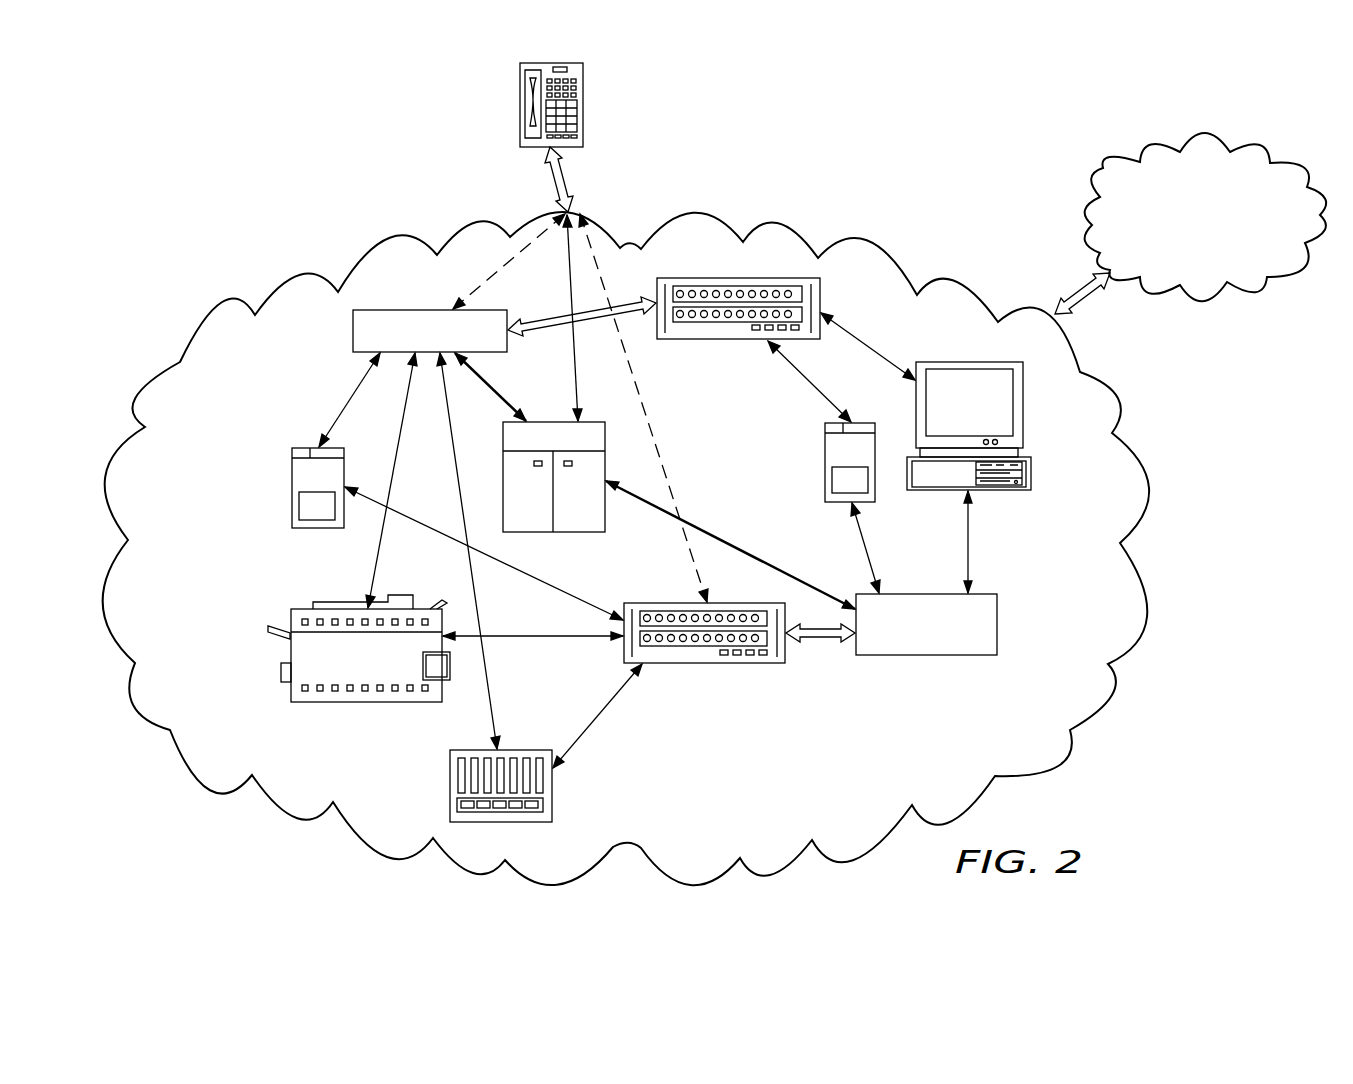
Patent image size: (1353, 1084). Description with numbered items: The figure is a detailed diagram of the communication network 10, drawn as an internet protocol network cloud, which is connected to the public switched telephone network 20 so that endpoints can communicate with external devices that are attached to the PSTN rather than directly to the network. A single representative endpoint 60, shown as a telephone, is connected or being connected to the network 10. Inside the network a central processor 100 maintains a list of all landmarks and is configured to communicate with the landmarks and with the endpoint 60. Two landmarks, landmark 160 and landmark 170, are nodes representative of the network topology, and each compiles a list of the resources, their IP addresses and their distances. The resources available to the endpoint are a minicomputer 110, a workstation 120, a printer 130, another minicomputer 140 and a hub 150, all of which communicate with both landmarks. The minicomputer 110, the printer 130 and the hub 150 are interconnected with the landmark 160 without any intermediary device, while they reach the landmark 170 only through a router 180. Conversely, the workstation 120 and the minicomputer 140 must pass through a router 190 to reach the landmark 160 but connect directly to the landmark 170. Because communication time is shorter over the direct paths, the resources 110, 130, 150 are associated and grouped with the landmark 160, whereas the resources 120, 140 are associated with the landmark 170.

The communication network 10 is at (790, 222).
The public switched telephone network 20 is at (1257, 146).
The endpoint 60 is at (520, 100).
The central processor 100 is at (584, 532).
The minicomputer 110 is at (292, 476).
The workstation 120 is at (998, 491).
The printer 130 is at (367, 702).
The minicomputer 140 is at (825, 440).
The hub 150 is at (450, 787).
The landmark 160 is at (352, 332).
The landmark 170 is at (928, 655).
The router 180 is at (773, 663).
The router 190 is at (700, 340).